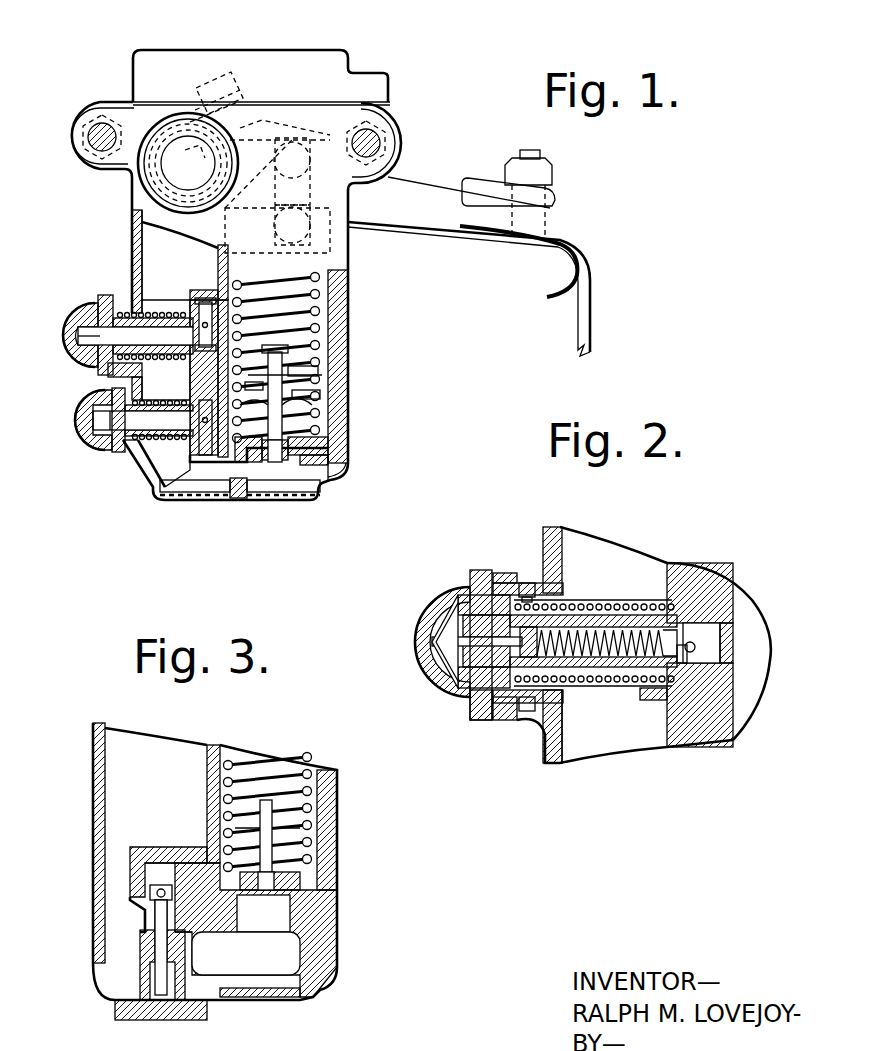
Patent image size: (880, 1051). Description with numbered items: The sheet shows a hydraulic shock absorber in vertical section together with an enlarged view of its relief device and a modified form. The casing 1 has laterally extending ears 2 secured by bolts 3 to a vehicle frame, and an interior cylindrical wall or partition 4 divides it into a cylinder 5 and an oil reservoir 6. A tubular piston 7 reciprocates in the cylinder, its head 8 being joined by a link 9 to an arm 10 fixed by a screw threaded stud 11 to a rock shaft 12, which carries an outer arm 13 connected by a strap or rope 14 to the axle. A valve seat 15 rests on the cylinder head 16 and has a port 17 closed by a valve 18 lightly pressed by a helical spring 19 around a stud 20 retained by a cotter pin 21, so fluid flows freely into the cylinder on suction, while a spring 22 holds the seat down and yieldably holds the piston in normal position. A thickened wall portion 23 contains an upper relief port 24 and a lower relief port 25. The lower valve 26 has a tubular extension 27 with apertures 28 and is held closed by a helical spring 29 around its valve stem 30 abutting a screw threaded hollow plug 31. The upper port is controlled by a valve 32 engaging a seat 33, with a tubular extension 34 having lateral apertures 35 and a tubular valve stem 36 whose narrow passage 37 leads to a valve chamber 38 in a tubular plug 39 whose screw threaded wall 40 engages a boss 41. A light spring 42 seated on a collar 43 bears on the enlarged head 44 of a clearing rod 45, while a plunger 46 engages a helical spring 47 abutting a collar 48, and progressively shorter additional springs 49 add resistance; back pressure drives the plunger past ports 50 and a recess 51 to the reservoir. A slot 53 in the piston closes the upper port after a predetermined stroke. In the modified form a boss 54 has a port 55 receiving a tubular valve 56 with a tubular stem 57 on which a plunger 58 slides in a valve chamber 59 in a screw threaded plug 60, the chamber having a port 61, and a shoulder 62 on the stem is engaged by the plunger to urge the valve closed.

In FIG. 1, the casing 1 is at (349, 297).
In FIG. 3, the casing 1 is at (330, 838).
In FIG. 1, the ears 2 is at (68, 140).
In FIG. 1, the bolts 3 is at (90, 125).
In FIG. 1, the cylindrical wall or partition 4 is at (148, 250).
In FIG. 1, the cylinder 5 is at (324, 412).
In FIG. 2, the cylinder 5 is at (740, 718).
In FIG. 3, the cylinder 5 is at (318, 868).
In FIG. 1, the reservoir 6 is at (136, 276).
In FIG. 2, the reservoir 6 is at (626, 556).
In FIG. 3, the reservoir 6 is at (150, 755).
In FIG. 1, the tubular piston 7 is at (349, 278).
In FIG. 1, the piston head 8 is at (312, 233).
In FIG. 1, the link 9 is at (312, 190).
In FIG. 1, the arm 10 is at (236, 235).
In FIG. 1, the screw threaded stud 11 is at (175, 142).
In FIG. 1, the rock shaft 12 is at (165, 175).
In FIG. 1, the arm 13 is at (444, 205).
In FIG. 1, the strap or rope 14 is at (583, 318).
In FIG. 1, the valve seat 15 is at (326, 430).
In FIG. 1, the cylinder head 16 is at (331, 468).
In FIG. 1, the port 17 is at (296, 449).
In FIG. 1, the valve 18 is at (321, 385).
In FIG. 1, the helical spring 19 is at (319, 371).
In FIG. 1, the stud 20 is at (352, 336).
In FIG. 1, the cotter pin 21 is at (352, 349).
In FIG. 1, the spring 22 is at (296, 291).
In FIG. 1, the thickened wall portion 23 is at (225, 373).
In FIG. 1, the upper relief port 24 is at (221, 280).
In FIG. 2, the upper relief port 24 is at (734, 637).
In FIG. 1, the lower relief port 25 is at (212, 438).
In FIG. 1, the lower valve 26 is at (142, 468).
In FIG. 1, the tubular extension 27 is at (162, 499).
In FIG. 1, the apertures 28 is at (225, 400).
In FIG. 1, the helical spring 29 is at (145, 391).
In FIG. 1, the valve stem 30 is at (92, 446).
In FIG. 1, the screw threaded hollow plug 31 is at (82, 420).
In FIG. 1, the valve 32 is at (200, 327).
In FIG. 2, the valve 32 is at (684, 673).
In FIG. 1, the seat 33 is at (226, 320).
In FIG. 2, the seat 33 is at (698, 603).
In FIG. 1, the tubular extension 34 is at (137, 377).
In FIG. 2, the tubular extension 34 is at (764, 643).
In FIG. 2, the lateral apertures 35 is at (697, 648).
In FIG. 2, the tubular valve stem 36 is at (613, 660).
In FIG. 2, the narrow passage 37 is at (450, 668).
In FIG. 2, the valve chamber 38 is at (463, 648).
In FIG. 2, the tubular plug 39 is at (431, 618).
In FIG. 2, the externally screw threaded wall 40 is at (515, 703).
In FIG. 2, the boss 41 is at (525, 713).
In FIG. 2, the light spring 42 is at (588, 690).
In FIG. 2, the collar 43 is at (652, 693).
In FIG. 2, the enlarged head 44 is at (463, 697).
In FIG. 2, the clearing rod 45 is at (466, 640).
In FIG. 1, the plunger 46 is at (98, 310).
In FIG. 2, the plunger 46 is at (473, 603).
In FIG. 2, the helical spring 47 is at (518, 607).
In FIG. 2, the collar 48 is at (668, 597).
In FIG. 2, the additional springs 49 is at (608, 608).
In FIG. 2, the ports 50 is at (527, 597).
In FIG. 2, the recess 51 is at (520, 612).
In FIG. 1, the aperture or slot 53 is at (238, 445).
In FIG. 3, the boss 54 is at (165, 850).
In FIG. 3, the port 55 is at (130, 883).
In FIG. 3, the tubular valve 56 is at (147, 907).
In FIG. 3, the tubular stem 57 is at (243, 913).
In FIG. 3, the plunger 58 is at (192, 955).
In FIG. 3, the valve chamber 59 is at (182, 978).
In FIG. 3, the screw threaded plug 60 is at (175, 1007).
In FIG. 3, the port 61 is at (137, 967).
In FIG. 3, the shoulder 62 is at (153, 942).